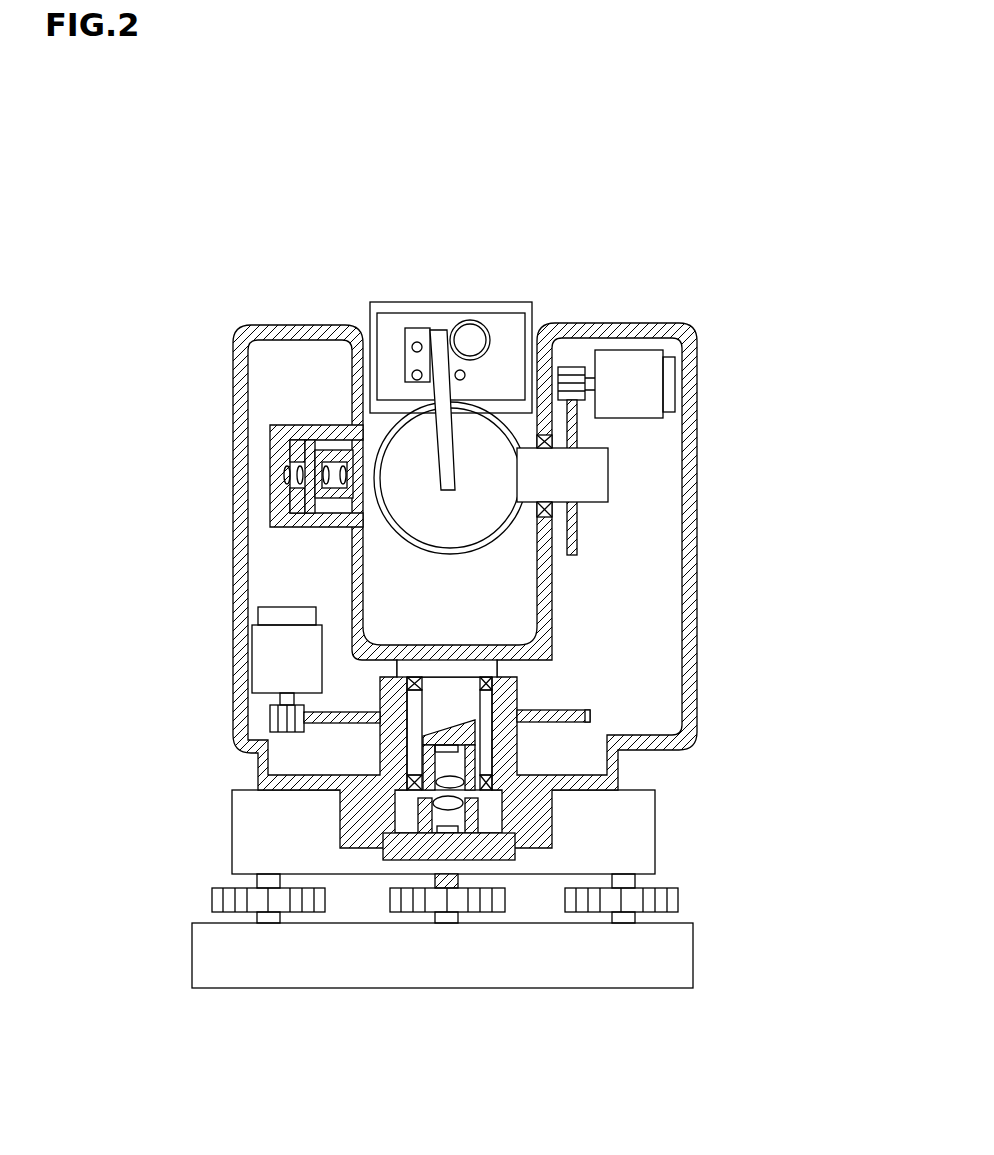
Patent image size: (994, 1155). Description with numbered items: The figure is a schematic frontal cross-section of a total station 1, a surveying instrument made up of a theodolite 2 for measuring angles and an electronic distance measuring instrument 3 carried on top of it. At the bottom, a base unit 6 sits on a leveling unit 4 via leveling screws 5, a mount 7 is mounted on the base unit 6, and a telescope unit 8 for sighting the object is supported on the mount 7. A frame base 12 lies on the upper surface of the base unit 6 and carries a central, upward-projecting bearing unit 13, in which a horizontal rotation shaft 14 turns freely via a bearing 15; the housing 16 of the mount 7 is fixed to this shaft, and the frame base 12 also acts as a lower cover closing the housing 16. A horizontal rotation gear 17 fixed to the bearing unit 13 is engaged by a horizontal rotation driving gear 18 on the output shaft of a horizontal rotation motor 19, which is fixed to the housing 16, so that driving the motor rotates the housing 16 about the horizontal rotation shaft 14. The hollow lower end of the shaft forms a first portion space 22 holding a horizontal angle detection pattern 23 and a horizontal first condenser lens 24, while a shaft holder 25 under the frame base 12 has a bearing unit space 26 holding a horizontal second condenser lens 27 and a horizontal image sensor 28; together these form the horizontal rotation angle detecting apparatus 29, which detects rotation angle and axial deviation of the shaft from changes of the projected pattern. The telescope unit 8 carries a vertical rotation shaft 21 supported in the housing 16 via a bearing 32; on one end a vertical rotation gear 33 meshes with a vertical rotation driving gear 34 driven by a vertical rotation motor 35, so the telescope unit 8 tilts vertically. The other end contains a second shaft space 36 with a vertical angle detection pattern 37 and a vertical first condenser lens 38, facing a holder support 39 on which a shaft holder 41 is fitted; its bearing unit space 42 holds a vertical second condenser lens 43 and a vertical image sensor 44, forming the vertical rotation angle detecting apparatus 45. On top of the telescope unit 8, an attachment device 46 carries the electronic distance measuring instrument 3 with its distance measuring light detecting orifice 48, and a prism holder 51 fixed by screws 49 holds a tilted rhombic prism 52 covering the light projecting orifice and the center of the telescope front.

The total station 1 is at (167, 205).
The theodolite 2 is at (457, 585).
The electronic distance measuring instrument 3 is at (449, 301).
The leveling unit 4 is at (192, 945).
The leveling screws 5 is at (680, 900).
The base unit 6 is at (655, 800).
The mount 7 is at (449, 585).
The telescope unit 8 is at (468, 548).
The frame base 12 is at (650, 780).
The bearing unit 13 is at (526, 692).
The horizontal rotation shaft 14 is at (507, 690).
The bearing 15 is at (528, 727).
The housing 16 is at (456, 585).
The horizontal rotation gear 17 is at (581, 668).
The horizontal rotation driving gear 18 is at (268, 717).
The horizontal rotation motor 19 is at (262, 650).
The vertical rotation shaft 21 is at (593, 502).
The first portion space 22 is at (440, 765).
The horizontal angle detection pattern 23 is at (394, 686).
The horizontal first condenser lens 24 is at (393, 934).
The shaft holder 25 is at (500, 845).
The bearing unit space 26 is at (405, 845).
The horizontal second condenser lens 27 is at (440, 934).
The horizontal image sensor 28 is at (480, 860).
The horizontal rotation angle detecting apparatus 29 is at (501, 952).
The bearing 32 is at (572, 425).
The vertical rotation gear 33 is at (617, 492).
The vertical rotation driving gear 34 is at (575, 367).
The vertical rotation motor 35 is at (645, 420).
The second shaft space 36 is at (247, 395).
The vertical angle detection pattern 37 is at (236, 488).
The vertical first condenser lens 38 is at (236, 471).
The holder support 39 is at (247, 419).
The shaft holder 41 is at (270, 450).
The bearing unit space 42 is at (284, 478).
The vertical second condenser lens 43 is at (247, 398).
The vertical image sensor 44 is at (285, 495).
The vertical rotation angle detecting apparatus 45 is at (247, 398).
The attachment device 46 is at (449, 290).
The distance measuring light detecting orifice 48 is at (490, 325).
The screws 49 is at (381, 417).
The prism holder 51 is at (415, 368).
The rhombic prism 52 is at (433, 482).